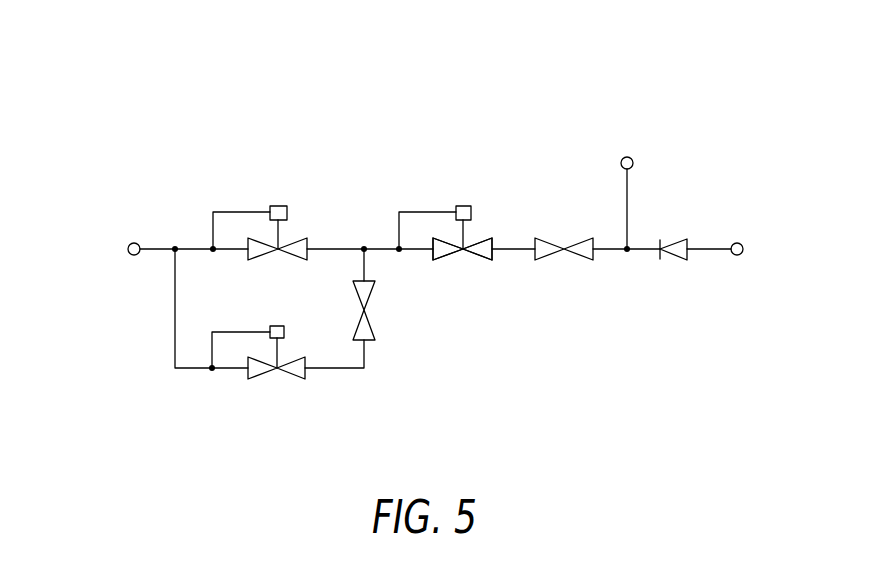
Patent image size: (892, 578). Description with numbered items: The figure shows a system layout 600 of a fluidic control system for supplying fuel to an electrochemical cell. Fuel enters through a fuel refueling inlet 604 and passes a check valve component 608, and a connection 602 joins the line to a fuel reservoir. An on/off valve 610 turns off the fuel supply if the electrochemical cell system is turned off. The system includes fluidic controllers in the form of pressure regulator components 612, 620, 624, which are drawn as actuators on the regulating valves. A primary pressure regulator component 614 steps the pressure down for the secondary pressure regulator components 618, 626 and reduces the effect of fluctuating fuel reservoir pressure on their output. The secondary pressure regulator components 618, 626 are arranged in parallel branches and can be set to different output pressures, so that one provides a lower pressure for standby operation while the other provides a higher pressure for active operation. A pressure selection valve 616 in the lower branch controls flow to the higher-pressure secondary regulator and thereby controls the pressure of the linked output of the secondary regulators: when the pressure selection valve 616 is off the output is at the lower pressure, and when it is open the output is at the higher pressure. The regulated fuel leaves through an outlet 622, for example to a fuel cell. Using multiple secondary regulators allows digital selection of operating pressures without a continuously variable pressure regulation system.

The system layout 600 is at (100, 118).
The connection 602 is at (634, 163).
The fuel refueling inlet 604 is at (744, 249).
The check valve component 608 is at (668, 258).
The on/off valve 610 is at (587, 257).
The pressure regulator component 612 is at (462, 203).
The primary pressure regulator component 614 is at (485, 257).
The pressure selection valve 616 is at (372, 322).
The secondary pressure regulator component 618 is at (297, 378).
The pressure regulator component 620 is at (228, 372).
The outlet 622 is at (127, 249).
The pressure regulator component 624 is at (278, 203).
The secondary pressure regulator component 626 is at (298, 257).